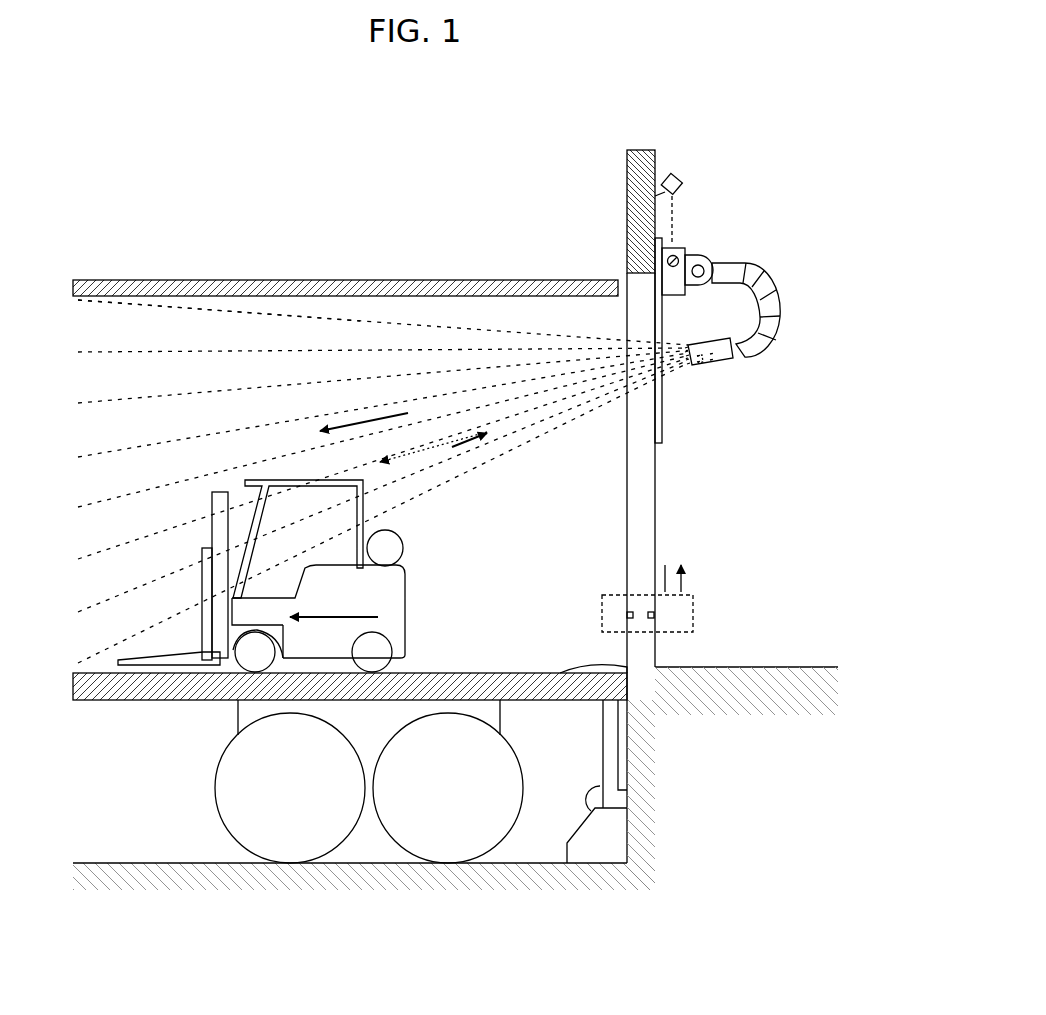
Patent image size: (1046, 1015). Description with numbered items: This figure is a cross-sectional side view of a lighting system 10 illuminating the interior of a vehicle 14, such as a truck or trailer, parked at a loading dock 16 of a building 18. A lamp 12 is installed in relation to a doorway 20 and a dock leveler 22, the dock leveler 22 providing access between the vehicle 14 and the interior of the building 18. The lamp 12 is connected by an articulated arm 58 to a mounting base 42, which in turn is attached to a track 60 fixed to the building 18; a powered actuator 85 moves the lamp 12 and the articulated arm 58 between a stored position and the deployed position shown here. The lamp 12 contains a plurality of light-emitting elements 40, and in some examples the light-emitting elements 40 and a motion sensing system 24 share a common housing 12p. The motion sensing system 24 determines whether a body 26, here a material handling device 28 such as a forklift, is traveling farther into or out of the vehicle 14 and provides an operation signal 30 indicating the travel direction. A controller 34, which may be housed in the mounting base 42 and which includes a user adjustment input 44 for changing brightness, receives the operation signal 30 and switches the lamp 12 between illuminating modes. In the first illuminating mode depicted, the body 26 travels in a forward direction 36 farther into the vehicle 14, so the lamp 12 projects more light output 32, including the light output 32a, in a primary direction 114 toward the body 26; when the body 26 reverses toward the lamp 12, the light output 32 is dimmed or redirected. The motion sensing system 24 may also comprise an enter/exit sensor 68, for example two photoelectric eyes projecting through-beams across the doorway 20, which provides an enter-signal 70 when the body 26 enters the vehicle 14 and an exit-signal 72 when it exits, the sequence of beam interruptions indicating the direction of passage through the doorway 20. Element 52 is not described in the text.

The lighting system 10 is at (798, 84).
The lamp 12 is at (718, 364).
The common housing 12p is at (733, 358).
The vehicle 14 is at (480, 279).
The loading dock 16 is at (778, 616).
The building 18 is at (626, 222).
The doorway 20 is at (652, 497).
The dock leveler 22 is at (600, 668).
The motion sensing system 24 is at (708, 365).
The body 26 is at (407, 590).
The material handling device 28 is at (407, 622).
The operation signal 30 is at (469, 443).
The light output 32 is at (378, 325).
The light output 32a is at (314, 320).
The controller 34 is at (683, 298).
The forward direction 36 is at (312, 612).
The light-emitting elements 40 is at (689, 382).
The mounting base 42 is at (658, 312).
The user adjustment input 44 is at (676, 256).
The secondary sensor 52 is at (685, 180).
The articulated arm 58 is at (781, 300).
The track 60 is at (662, 440).
The enter/exit sensor 68 is at (600, 616).
The enter-signal 70 is at (660, 582).
The exit-signal 72 is at (683, 582).
The powered actuator 85 is at (700, 257).
The primary direction 114 is at (353, 421).